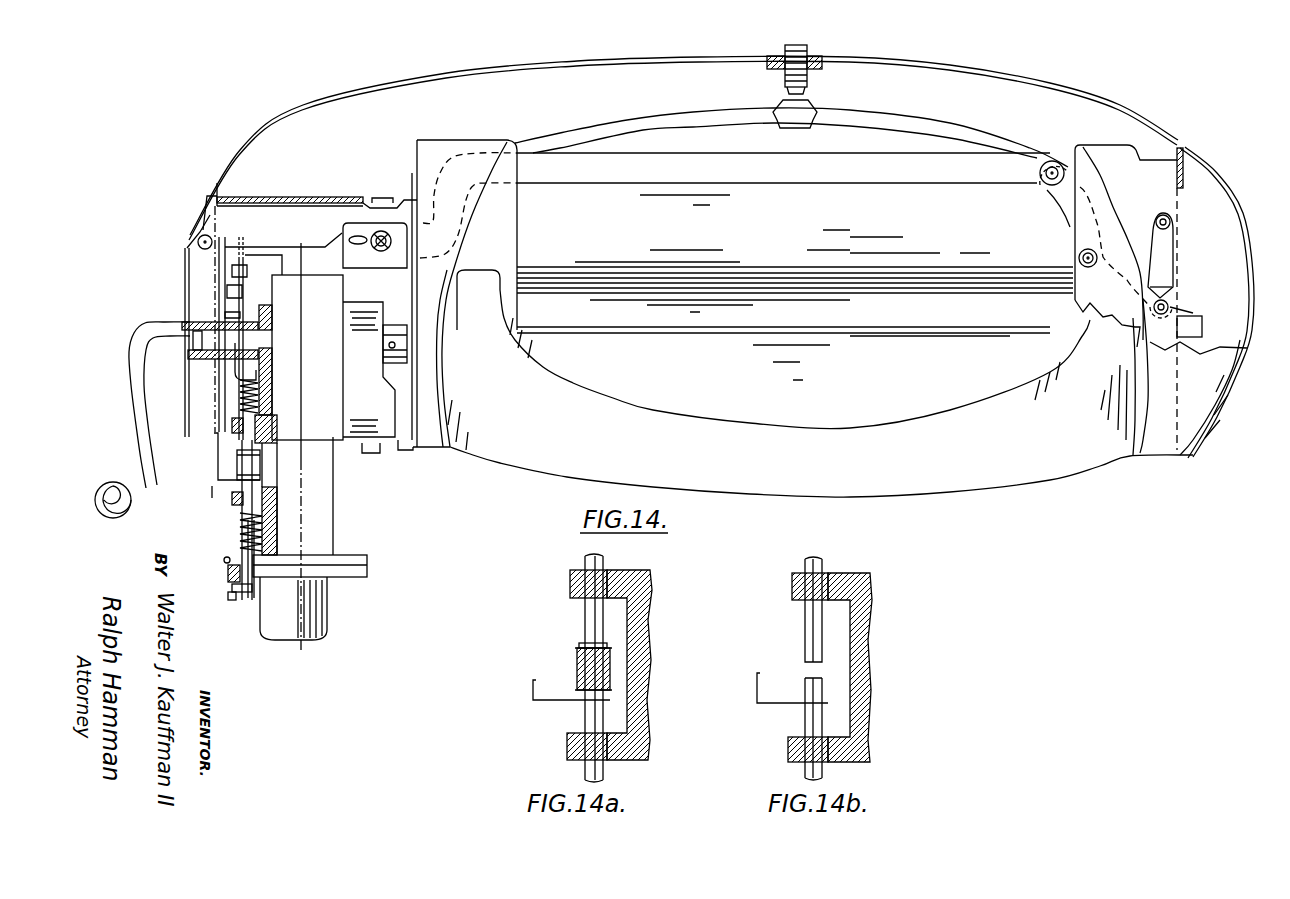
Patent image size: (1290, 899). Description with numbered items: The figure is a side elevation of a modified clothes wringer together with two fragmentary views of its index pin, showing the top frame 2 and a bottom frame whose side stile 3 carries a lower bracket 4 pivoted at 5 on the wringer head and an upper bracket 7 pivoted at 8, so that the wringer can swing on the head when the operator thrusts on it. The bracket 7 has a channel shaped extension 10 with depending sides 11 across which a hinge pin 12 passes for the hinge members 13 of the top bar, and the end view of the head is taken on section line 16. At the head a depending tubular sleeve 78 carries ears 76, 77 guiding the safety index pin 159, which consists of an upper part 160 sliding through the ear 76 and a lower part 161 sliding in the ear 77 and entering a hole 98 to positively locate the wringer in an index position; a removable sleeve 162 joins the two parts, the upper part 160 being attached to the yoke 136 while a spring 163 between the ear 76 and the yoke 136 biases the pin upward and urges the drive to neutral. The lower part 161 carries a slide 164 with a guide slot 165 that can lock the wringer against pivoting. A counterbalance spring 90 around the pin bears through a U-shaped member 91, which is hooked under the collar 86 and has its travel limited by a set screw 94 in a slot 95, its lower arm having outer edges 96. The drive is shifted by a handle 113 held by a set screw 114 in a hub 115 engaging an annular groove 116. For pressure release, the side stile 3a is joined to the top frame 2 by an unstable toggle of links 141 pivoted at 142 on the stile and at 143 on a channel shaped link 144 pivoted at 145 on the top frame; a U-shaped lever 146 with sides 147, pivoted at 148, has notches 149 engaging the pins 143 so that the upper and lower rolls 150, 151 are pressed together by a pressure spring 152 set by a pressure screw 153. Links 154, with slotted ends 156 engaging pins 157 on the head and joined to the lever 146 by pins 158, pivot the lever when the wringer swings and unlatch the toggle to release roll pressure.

In FIG. 14, the top frame 2 is at (323, 112).
In FIG. 14, the side stile 3 is at (426, 452).
In FIG. 14, the side stile 3a is at (1112, 153).
In FIG. 14, the bracket 4 is at (406, 451).
In FIG. 14, the pivot 5 is at (371, 455).
In FIG. 14, the bracket 7 is at (406, 197).
In FIG. 14, the pivot 8 is at (381, 197).
In FIG. 14, the channel shaped extension 10 is at (274, 205).
In FIG. 14, the depending sides 11 is at (305, 218).
In FIG. 14, the hinge pin 12 is at (196, 247).
In FIG. 14, the hinge members 13 is at (201, 211).
In FIG. 14, the section line 16 is at (208, 192).
In FIG. 14, the ear 76 is at (232, 426).
In FIG. 14A, the ear 76 is at (570, 583).
In FIG. 14B, the ear 76 is at (792, 583).
In FIG. 14, the ear 77 is at (232, 500).
In FIG. 14A, the ear 77 is at (567, 746).
In FIG. 14B, the ear 77 is at (788, 748).
In FIG. 14, the tubular sleeve 78 is at (334, 524).
In FIG. 14, the collar 86 is at (360, 585).
In FIG. 14, the counterbalance spring 90 is at (268, 531).
In FIG. 14, the U-shaped member 91 is at (234, 536).
In FIG. 14, the set screw 94 is at (228, 571).
In FIG. 14, the slot 95 is at (224, 560).
In FIG. 14, the outer edges 96 is at (232, 600).
In FIG. 14, the hole 98 is at (250, 599).
In FIG. 14, the handle 113 is at (134, 426).
In FIG. 14, the set screw 114 is at (201, 360).
In FIG. 14, the hub 115 is at (156, 326).
In FIG. 14, the annular groove 116 is at (198, 323).
In FIG. 14, the yoke 136 is at (250, 372).
In FIG. 14, the links 141 is at (1172, 254).
In FIG. 14, the pivot 142 is at (1172, 227).
In FIG. 14, the pins 143 is at (1170, 307).
In FIG. 14, the channel shaped link 144 is at (1241, 222).
In FIG. 14, the pivot 145 is at (1186, 147).
In FIG. 14, the U-shaped lever 146 is at (1205, 322).
In FIG. 14, the sides 147 is at (1063, 203).
In FIG. 14, the pivot 148 is at (1098, 264).
In FIG. 14, the notch 149 is at (1165, 292).
In FIG. 14, the upper roll 150 is at (696, 238).
In FIG. 14, the lower roll 151 is at (822, 315).
In FIG. 14, the pressure spring 152 is at (918, 124).
In FIG. 14, the pressure screw 153 is at (808, 90).
In FIG. 14, the links 154 is at (852, 164).
In FIG. 14, the slotted ends 156 is at (358, 246).
In FIG. 14, the pins 157 is at (385, 231).
In FIG. 14, the pins 158 is at (1045, 185).
In FIG. 14, the safety index pin 159 is at (232, 588).
In FIG. 14, the upper part 160 is at (267, 407).
In FIG. 14A, the upper part 160 is at (585, 621).
In FIG. 14B, the upper part 160 is at (805, 621).
In FIG. 14, the lower part 161 is at (256, 500).
In FIG. 14A, the lower part 161 is at (585, 716).
In FIG. 14B, the lower part 161 is at (805, 716).
In FIG. 14, the removable sleeve 162 is at (237, 462).
In FIG. 14A, the removable sleeve 162 is at (577, 658).
In FIG. 14, the spring 163 is at (260, 393).
In FIG. 14, the slide 164 is at (217, 413).
In FIG. 14A, the slide 164 is at (533, 691).
In FIG. 14B, the slide 164 is at (757, 682).
In FIG. 14, the guide slot 165 is at (216, 385).